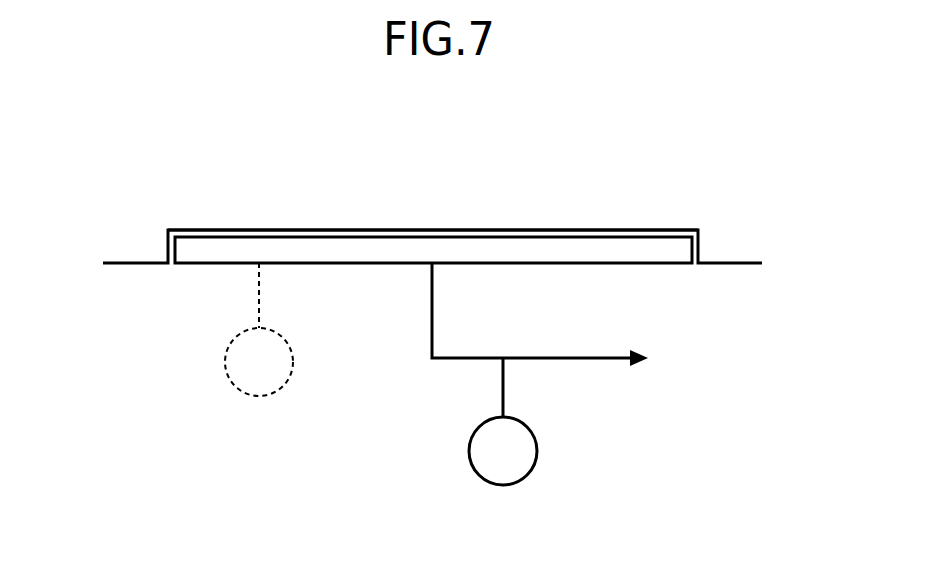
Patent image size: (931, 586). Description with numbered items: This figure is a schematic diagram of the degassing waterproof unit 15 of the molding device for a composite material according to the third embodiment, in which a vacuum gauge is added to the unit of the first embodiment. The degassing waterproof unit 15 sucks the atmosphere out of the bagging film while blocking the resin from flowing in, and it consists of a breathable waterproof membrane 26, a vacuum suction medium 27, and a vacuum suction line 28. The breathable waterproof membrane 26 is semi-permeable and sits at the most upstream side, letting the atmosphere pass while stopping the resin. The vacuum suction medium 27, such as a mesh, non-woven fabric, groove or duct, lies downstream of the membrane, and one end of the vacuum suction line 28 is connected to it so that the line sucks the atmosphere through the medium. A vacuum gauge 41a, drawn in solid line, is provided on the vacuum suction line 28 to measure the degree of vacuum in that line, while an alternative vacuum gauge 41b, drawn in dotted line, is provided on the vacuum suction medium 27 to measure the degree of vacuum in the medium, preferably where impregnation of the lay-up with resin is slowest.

The degassing waterproof unit 15 is at (528, 167).
The breathable waterproof membrane 26 is at (433, 230).
The vacuum suction medium 27 is at (584, 264).
The vacuum suction line 28 is at (581, 362).
The vacuum gauge 41a is at (500, 485).
The vacuum gauge 41b is at (259, 396).